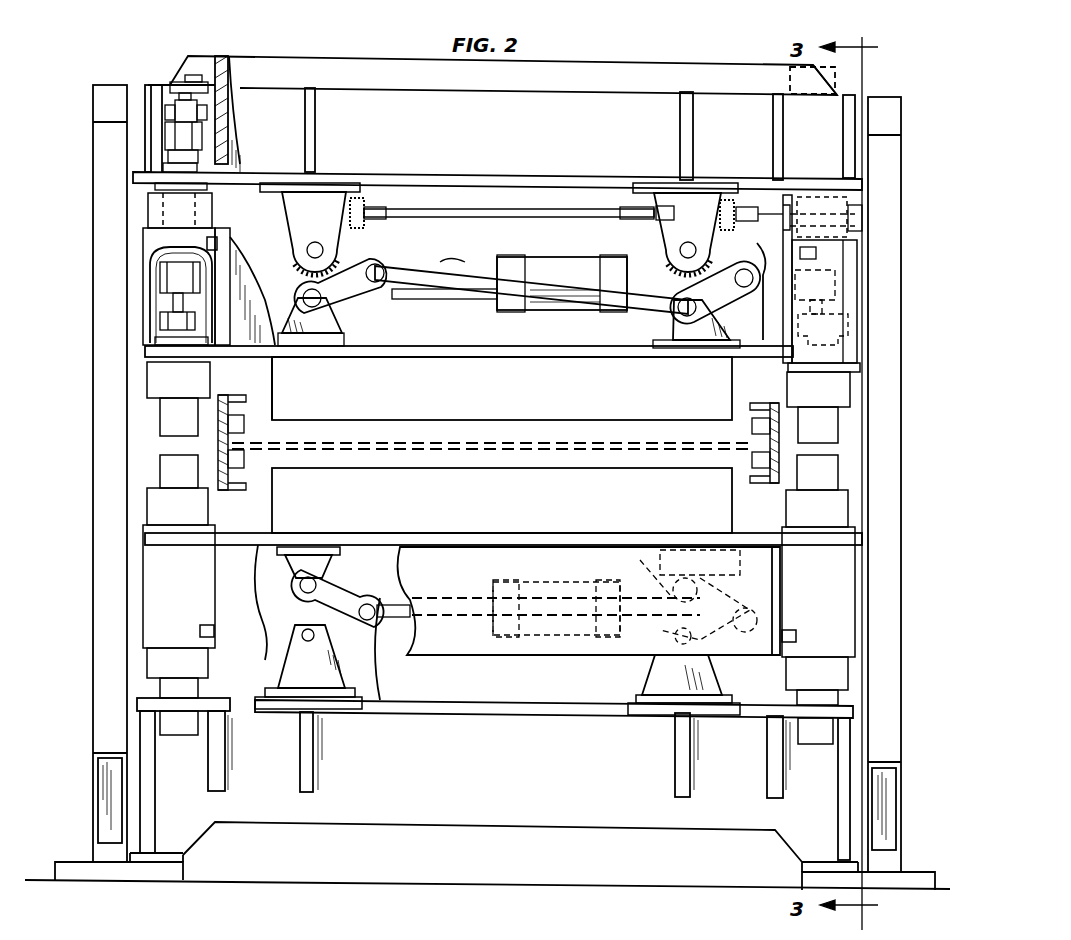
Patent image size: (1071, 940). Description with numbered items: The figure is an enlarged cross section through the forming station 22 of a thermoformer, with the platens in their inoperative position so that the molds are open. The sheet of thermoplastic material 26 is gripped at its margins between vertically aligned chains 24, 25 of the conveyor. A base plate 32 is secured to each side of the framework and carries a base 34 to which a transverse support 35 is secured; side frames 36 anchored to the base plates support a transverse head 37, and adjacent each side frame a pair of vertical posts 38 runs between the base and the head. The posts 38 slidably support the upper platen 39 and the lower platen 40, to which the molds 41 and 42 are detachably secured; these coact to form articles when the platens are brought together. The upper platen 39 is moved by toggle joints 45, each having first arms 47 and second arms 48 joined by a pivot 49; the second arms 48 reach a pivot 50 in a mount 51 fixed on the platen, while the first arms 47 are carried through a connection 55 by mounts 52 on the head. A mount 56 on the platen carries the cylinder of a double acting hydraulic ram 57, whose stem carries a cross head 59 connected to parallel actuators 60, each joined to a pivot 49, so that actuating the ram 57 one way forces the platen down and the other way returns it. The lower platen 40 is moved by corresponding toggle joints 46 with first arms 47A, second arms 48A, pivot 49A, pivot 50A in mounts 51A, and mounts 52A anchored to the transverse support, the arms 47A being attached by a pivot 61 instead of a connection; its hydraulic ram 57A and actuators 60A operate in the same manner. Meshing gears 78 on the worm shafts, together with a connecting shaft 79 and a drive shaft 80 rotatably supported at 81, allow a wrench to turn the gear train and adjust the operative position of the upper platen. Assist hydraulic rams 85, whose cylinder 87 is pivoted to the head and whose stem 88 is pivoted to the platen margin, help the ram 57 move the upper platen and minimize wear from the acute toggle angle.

The forming station 22 is at (680, 50).
The chain 24 is at (245, 410).
The chain 25 is at (248, 482).
The sheet of thermoplastic material 26 is at (552, 460).
The base plate 32 is at (185, 872).
The base 34 is at (185, 855).
The transverse support 35 is at (503, 828).
The side frame 36 is at (103, 538).
The transverse head 37 is at (390, 85).
The vertical post 38 is at (162, 418).
The upper platen 39 is at (513, 357).
The lower platen 40 is at (556, 534).
The mold 41 is at (706, 404).
The mold 42 is at (704, 512).
The toggle joint 45 is at (388, 252).
The toggle joint 46 is at (763, 592).
The first arm 47 is at (372, 296).
The first arm 47A is at (350, 592).
The second arm 48 is at (325, 310).
The second arm 48A is at (372, 685).
The pivot 49 is at (702, 245).
The pivot 49A is at (398, 620).
The pivot 50 is at (304, 300).
The pivot 50A is at (363, 540).
The mount 51 is at (340, 350).
The mount 51A is at (318, 560).
The mount 52 is at (318, 186).
The mount 52A is at (300, 698).
The connection 55 is at (312, 238).
The mount 56 is at (645, 335).
The hydraulic ram 57 is at (562, 245).
The hydraulic ram 57A is at (580, 645).
The cross head 59 is at (448, 296).
The actuator 60 is at (572, 290).
The actuator 60A is at (525, 640).
The pivot 61 is at (300, 640).
The gear 78 is at (362, 204).
The shaft 79 is at (512, 208).
The drive shaft 80 is at (762, 215).
The rotatable support 81 is at (860, 212).
The hydraulic ram 85 is at (152, 270).
The cylinder 87 is at (200, 147).
The stem 88 is at (170, 302).